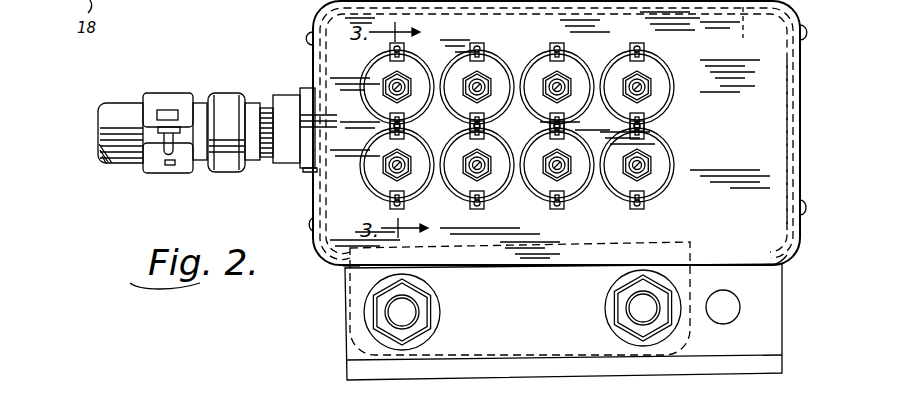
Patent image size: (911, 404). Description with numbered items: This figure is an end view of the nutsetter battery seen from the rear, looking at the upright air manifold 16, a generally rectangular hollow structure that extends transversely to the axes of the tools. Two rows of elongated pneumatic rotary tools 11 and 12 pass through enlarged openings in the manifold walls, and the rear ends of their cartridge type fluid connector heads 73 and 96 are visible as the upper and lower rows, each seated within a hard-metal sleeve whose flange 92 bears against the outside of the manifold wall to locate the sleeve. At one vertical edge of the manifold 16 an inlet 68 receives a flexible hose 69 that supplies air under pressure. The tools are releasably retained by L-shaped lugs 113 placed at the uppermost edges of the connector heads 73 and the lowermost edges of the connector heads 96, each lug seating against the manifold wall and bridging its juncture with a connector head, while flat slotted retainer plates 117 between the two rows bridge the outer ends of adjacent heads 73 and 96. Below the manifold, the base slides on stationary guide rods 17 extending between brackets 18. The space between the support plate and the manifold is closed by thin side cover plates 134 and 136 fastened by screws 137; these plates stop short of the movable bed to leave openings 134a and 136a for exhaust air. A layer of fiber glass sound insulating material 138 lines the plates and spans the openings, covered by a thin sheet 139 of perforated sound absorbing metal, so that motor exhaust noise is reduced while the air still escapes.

The rotary tools 11 is at (536, 108).
The rotary tools 12 is at (533, 184).
The air manifold 16 is at (766, 166).
The guide rods 17 is at (643, 308).
The brackets 18 is at (762, 327).
The inlet 68 is at (293, 163).
The hose 69 is at (122, 110).
The connector head 73 is at (657, 97).
The flange 92 is at (672, 88).
The connector head 96 is at (657, 153).
The L-shaped lugs 113 is at (390, 48).
The flat retainer elements 117 is at (404, 125).
The side cover plate 134 is at (312, 61).
The opening 134a is at (342, 268).
The side cover plate 136 is at (792, 85).
The opening 136a is at (767, 255).
The screws 137 is at (303, 37).
The sound insulating material 138 is at (790, 62).
The perforated sheet 139 is at (718, 52).